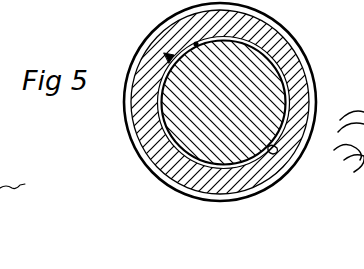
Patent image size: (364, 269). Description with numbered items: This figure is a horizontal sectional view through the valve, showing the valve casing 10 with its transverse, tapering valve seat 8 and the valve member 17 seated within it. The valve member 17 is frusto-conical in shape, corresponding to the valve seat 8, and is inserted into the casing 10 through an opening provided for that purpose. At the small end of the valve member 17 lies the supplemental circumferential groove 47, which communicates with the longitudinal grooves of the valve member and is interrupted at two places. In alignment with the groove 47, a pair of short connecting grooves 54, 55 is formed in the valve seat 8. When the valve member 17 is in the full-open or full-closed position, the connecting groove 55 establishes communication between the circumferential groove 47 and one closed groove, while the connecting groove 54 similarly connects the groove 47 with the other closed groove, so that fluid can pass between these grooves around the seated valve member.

The valve casing 10 is at (309, 61).
The supplemental circumferential groove 47 is at (160, 113).
The valve member 17 is at (264, 106).
The valve seat 8 is at (196, 44).
The connecting groove 54 is at (165, 56).
The connecting groove 55 is at (275, 151).